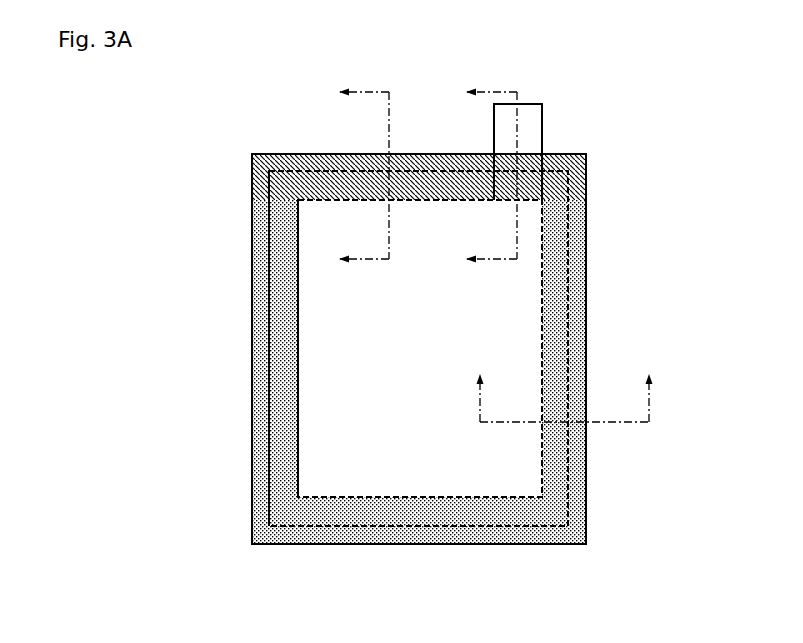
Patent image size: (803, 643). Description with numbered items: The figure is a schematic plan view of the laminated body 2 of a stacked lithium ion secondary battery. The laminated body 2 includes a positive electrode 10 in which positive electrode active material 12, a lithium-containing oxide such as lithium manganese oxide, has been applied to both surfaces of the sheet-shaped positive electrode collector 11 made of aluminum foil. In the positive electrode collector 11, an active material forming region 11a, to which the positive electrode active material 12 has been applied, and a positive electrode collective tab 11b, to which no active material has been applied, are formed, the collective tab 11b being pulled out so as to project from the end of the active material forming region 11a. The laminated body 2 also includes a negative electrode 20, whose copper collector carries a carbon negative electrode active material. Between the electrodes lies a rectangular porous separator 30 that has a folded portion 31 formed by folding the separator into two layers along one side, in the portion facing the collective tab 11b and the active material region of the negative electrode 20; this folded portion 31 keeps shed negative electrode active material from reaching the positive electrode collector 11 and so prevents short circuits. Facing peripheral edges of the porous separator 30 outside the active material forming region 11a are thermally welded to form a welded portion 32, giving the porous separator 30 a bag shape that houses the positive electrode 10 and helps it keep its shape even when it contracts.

The laminated body 2 is at (668, 108).
The positive electrode 10 is at (292, 457).
The positive electrode collector 11 is at (297, 367).
The active material forming region 11a is at (307, 267).
The positive electrode active material 12 is at (220, 348).
The positive electrode collective tab 11b is at (489, 193).
The negative electrode 20 is at (573, 457).
The porous separator 30 is at (590, 305).
The folded portion 31 is at (592, 155).
The welded portion 32 is at (577, 237).